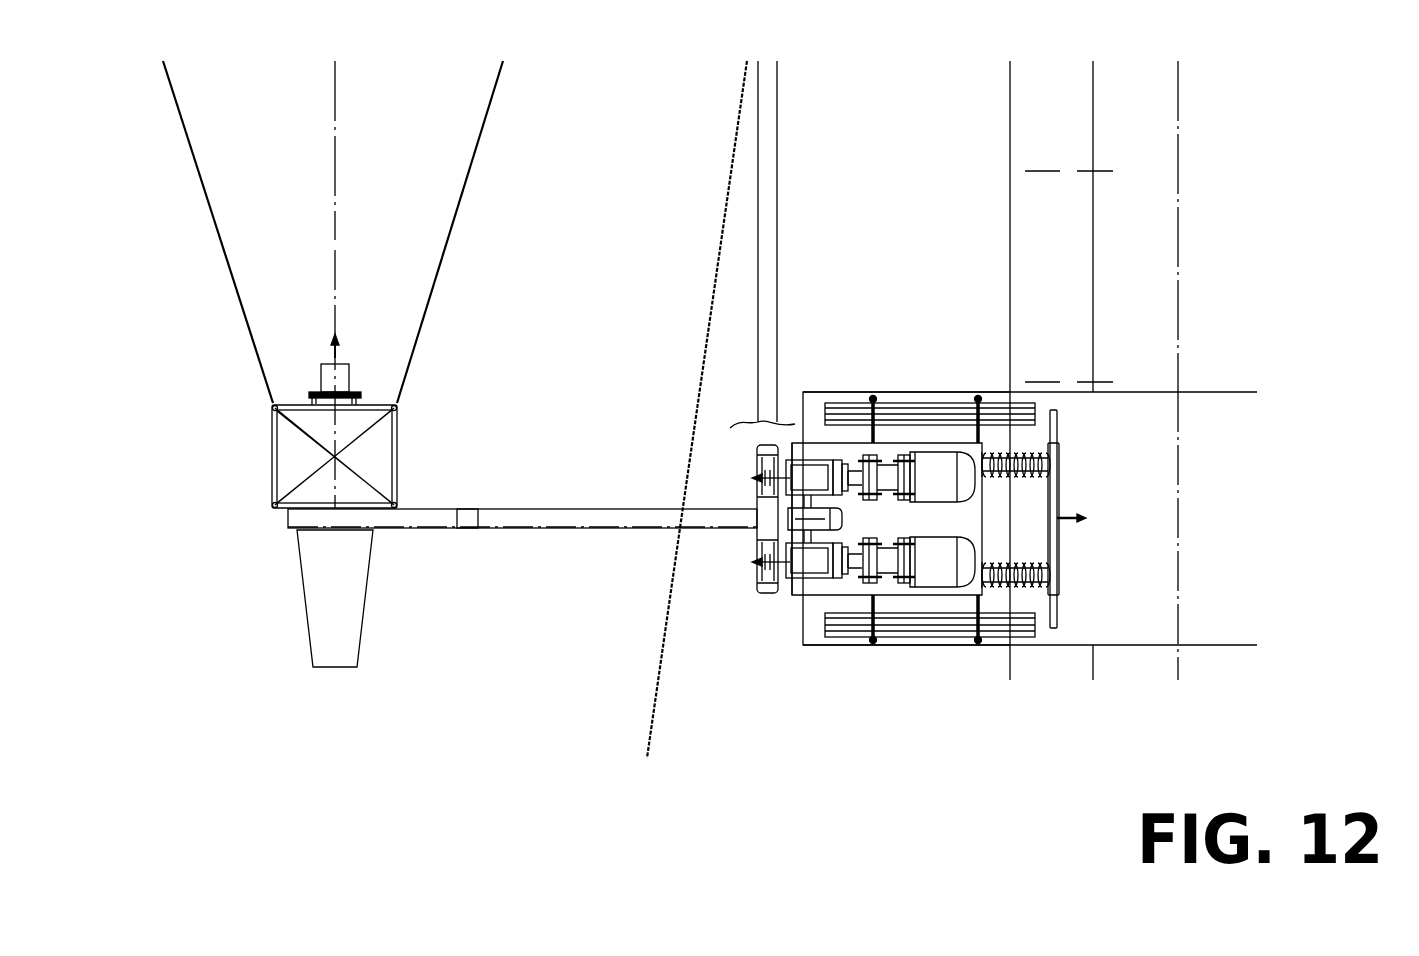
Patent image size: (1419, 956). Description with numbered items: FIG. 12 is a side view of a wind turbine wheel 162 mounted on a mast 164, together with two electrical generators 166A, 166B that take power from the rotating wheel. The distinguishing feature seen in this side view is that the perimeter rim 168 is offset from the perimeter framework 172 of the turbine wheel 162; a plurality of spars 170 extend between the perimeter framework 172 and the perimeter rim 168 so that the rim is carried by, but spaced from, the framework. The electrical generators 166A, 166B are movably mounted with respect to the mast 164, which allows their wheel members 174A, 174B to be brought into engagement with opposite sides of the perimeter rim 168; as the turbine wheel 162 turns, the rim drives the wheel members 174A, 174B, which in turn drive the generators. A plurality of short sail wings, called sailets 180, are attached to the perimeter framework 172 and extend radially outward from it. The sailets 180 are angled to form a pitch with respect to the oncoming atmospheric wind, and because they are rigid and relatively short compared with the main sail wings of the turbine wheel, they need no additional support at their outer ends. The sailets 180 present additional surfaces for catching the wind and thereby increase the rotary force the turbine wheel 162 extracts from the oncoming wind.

The turbine wheel 162 is at (548, 225).
The mast 164 is at (1010, 290).
The electrical generator 166A is at (968, 484).
The electrical generator 166B is at (968, 561).
The perimeter rim 168 is at (770, 308).
The spars 170 is at (601, 508).
The perimeter framework 172 is at (397, 456).
The wheel member 174A is at (762, 468).
The wheel member 174B is at (767, 596).
The sailets 180 is at (323, 613).